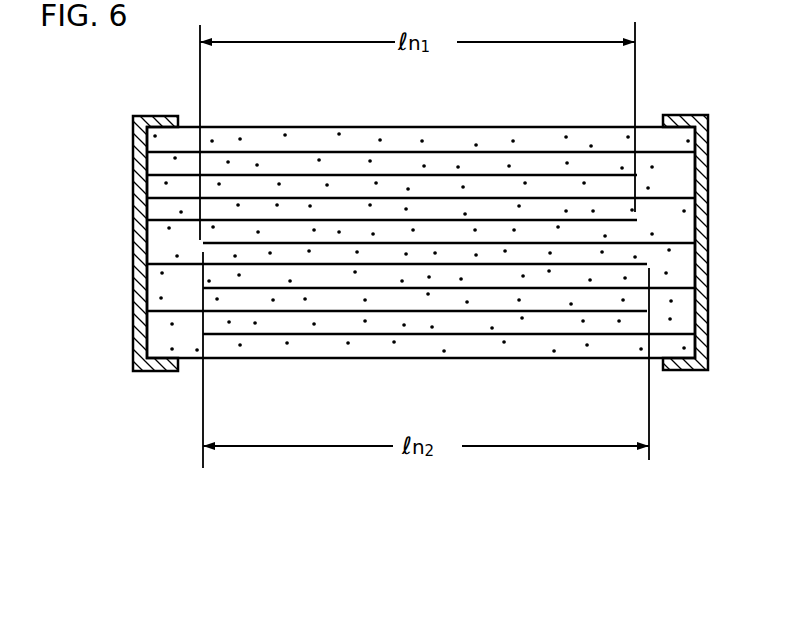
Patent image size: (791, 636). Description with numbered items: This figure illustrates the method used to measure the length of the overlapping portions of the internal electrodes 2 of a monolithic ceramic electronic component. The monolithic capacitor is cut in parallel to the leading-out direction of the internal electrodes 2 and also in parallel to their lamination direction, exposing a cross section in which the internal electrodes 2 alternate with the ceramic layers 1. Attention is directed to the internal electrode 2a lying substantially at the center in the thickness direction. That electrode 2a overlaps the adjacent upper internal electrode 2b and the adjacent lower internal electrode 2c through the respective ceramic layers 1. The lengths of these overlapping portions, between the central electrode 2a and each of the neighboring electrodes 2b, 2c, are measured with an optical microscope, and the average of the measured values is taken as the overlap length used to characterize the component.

The ceramic layers 1 is at (278, 258).
The internal electrodes 2 is at (555, 175).
The internal electrode lying at the center in the thickness direction 2a is at (412, 243).
The adjacent upper internal electrode 2b is at (345, 222).
The adjacent lower internal electrode 2c is at (542, 264).